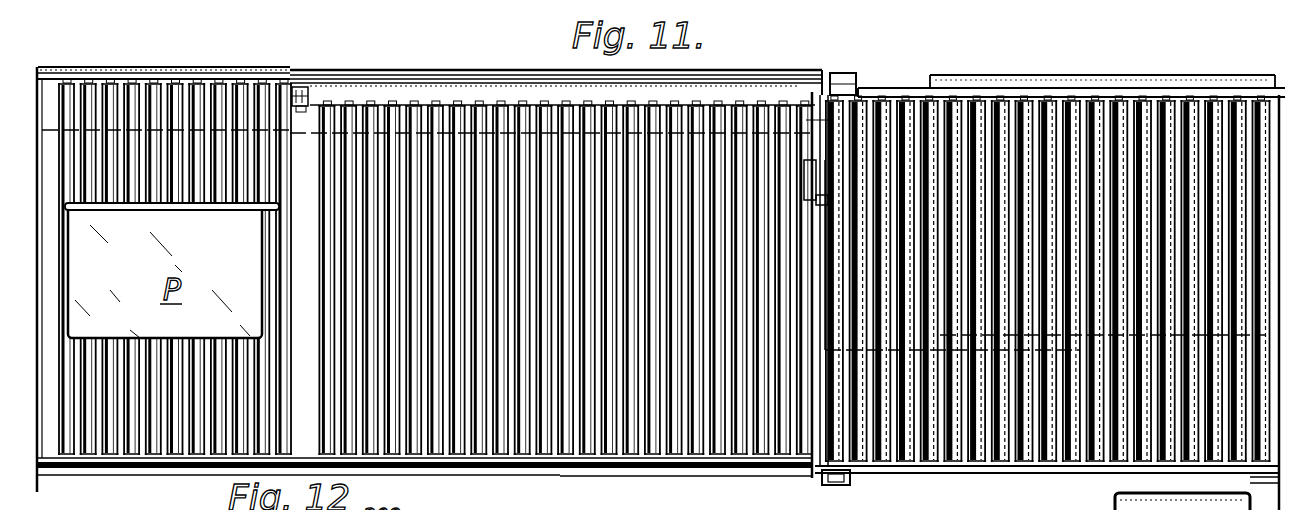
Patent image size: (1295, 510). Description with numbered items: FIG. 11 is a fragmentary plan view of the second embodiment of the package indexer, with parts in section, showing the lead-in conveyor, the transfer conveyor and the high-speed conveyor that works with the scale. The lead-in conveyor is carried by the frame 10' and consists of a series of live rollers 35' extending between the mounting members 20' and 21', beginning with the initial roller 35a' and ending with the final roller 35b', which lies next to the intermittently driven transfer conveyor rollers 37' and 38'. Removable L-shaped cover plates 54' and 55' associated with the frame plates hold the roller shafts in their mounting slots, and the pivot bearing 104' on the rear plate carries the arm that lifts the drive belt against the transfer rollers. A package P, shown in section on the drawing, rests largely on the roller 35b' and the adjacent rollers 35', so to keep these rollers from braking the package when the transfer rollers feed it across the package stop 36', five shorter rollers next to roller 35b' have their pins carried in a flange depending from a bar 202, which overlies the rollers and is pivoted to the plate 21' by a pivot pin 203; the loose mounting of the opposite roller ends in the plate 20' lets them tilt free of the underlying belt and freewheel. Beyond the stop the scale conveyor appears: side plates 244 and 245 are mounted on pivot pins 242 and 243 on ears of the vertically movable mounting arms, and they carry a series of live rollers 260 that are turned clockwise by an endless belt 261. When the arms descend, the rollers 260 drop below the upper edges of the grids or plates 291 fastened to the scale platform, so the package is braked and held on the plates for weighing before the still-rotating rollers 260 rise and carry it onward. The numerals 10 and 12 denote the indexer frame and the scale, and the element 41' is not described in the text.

The frame 10' is at (175, 233).
The initial roller 35a' is at (164, 52).
The pivot pin 203 is at (303, 85).
The mounting member 21' is at (556, 51).
The cover plate 55' is at (556, 58).
The bar 202 is at (510, 93).
The live rollers 35' is at (446, 245).
The final roller 35b' is at (696, 244).
The transfer conveyor roller 37' is at (811, 261).
The transfer conveyor roller 38' is at (853, 68).
The package stop 36' is at (851, 132).
The pivot pin 242 is at (858, 90).
The side plate 244 is at (1233, 95).
The grids or plates 291 is at (995, 110).
The live rollers 260 is at (1075, 105).
The frame 10 is at (653, 260).
The scale 12 is at (424, 282).
The plate support bar 41' is at (172, 222).
The pivot pin 243 is at (830, 482).
The endless belt 261 is at (848, 484).
The side plate 245 is at (1080, 472).
The pivot bearing 104' is at (244, 489).
The mounting member 20' is at (480, 488).
The cover plate 54' is at (686, 491).